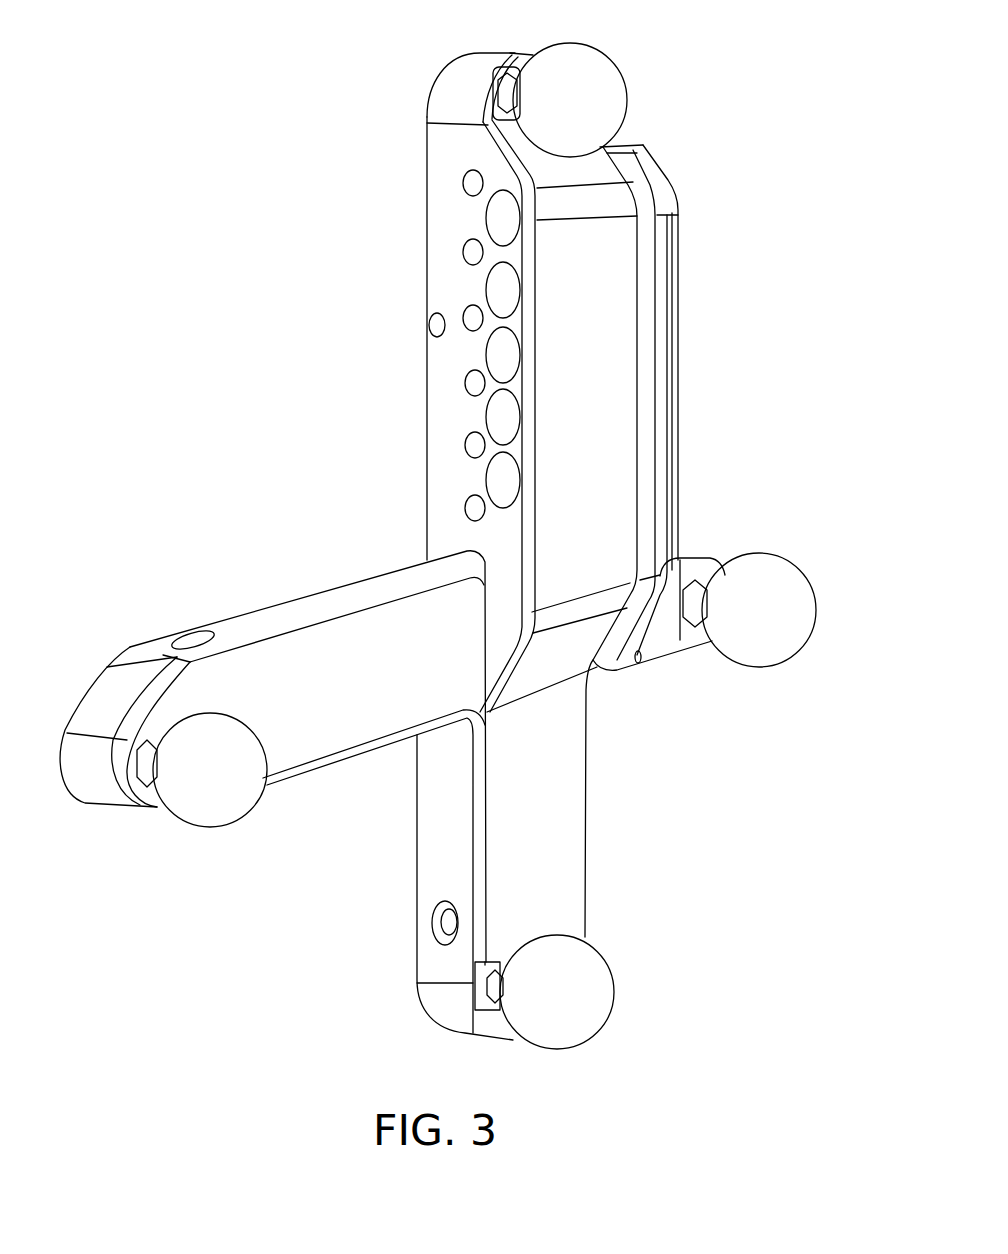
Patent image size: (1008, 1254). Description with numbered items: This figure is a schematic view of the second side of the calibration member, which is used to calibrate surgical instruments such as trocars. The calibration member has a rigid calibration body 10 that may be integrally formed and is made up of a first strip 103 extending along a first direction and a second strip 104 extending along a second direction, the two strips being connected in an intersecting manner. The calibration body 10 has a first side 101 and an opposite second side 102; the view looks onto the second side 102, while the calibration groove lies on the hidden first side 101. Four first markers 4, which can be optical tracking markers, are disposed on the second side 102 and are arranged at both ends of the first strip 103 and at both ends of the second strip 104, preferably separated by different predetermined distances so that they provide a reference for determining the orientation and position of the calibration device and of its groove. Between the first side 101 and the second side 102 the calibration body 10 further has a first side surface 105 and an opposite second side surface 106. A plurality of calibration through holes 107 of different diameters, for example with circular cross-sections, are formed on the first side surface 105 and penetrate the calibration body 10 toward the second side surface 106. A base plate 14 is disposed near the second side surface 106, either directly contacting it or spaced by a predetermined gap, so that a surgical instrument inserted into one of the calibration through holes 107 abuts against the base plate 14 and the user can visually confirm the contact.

The first markers 4 is at (617, 92).
The calibration body 10 is at (372, 546).
The base plate 14 is at (641, 243).
The first side 101 is at (343, 583).
The second side 102 is at (586, 792).
The first strip 103 is at (414, 935).
The second strip 104 is at (390, 733).
The first side surface 105 is at (419, 306).
The second side surface 106 is at (646, 397).
The calibration through holes 107 is at (470, 252).